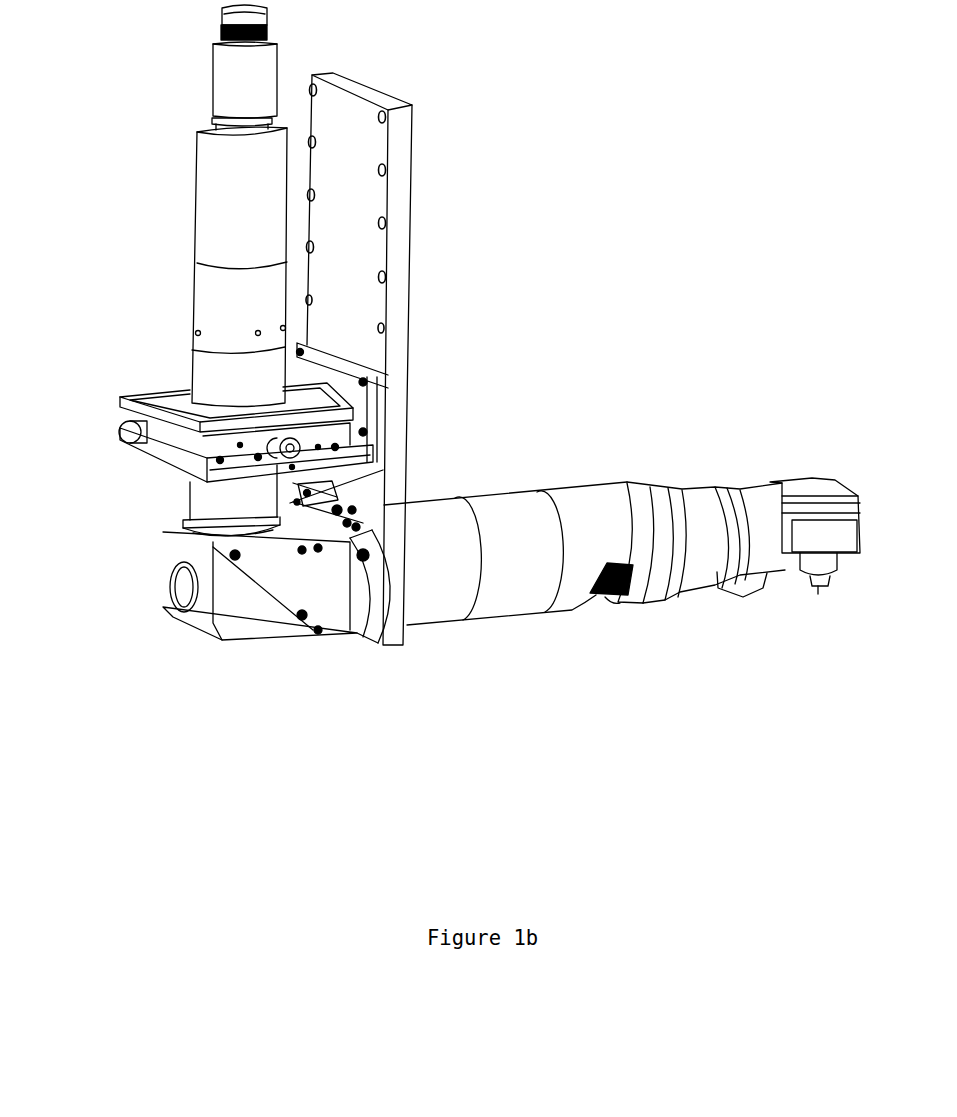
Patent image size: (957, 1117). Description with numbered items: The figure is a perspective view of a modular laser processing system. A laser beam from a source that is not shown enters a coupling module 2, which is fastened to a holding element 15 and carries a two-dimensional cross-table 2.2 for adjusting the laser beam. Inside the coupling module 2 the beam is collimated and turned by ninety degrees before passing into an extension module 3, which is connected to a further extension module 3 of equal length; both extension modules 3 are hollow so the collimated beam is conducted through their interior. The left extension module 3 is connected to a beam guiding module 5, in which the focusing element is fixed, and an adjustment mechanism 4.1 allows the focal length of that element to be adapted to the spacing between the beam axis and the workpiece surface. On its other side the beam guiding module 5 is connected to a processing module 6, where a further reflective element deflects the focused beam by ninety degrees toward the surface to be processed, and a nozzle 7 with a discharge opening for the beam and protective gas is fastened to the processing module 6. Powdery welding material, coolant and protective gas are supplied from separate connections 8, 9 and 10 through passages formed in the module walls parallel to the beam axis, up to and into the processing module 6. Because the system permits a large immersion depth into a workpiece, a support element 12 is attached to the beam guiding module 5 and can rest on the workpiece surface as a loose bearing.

The coupling module 2 is at (190, 497).
The two-dimensional cross-table 2.2 is at (123, 420).
The extension module 3 is at (425, 513).
The adjustment mechanism 4.1 is at (573, 645).
The beam guiding module 5 is at (680, 477).
The processing module 6 is at (823, 438).
The nozzle 7 is at (787, 623).
The connection 8 is at (370, 650).
The connection 9 is at (362, 502).
The connection 10 is at (316, 548).
The support element 12 is at (725, 635).
The holding element 15 is at (413, 222).